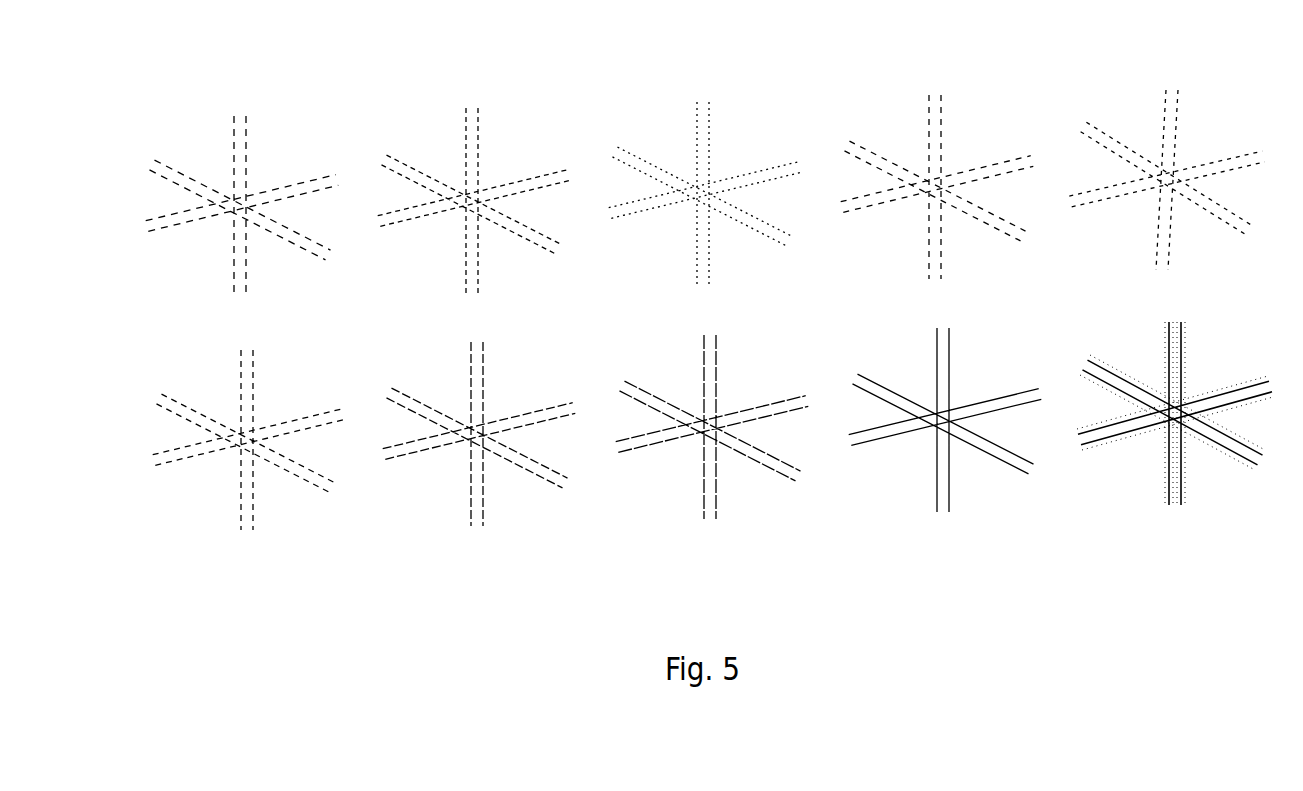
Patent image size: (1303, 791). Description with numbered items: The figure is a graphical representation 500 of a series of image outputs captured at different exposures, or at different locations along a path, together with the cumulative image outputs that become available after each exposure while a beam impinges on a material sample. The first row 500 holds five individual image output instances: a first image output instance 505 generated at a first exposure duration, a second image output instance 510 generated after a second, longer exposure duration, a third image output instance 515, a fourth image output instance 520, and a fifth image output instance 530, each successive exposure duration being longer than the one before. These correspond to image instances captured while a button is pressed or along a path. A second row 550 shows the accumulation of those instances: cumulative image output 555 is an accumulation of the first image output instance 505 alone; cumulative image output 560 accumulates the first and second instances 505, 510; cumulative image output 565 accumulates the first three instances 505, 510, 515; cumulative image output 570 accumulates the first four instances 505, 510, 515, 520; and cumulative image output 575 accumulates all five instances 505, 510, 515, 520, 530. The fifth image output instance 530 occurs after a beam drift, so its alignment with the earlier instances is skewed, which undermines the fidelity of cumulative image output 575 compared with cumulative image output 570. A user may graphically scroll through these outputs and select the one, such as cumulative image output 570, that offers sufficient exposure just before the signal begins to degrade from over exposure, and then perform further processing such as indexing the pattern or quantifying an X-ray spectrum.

The graphical representation 500 is at (652, 170).
The first image output instance 505 is at (242, 175).
The second image output instance 510 is at (474, 173).
The third image output instance 515 is at (705, 166).
The fourth image output instance 520 is at (937, 161).
The fifth image output instance 530 is at (1166, 157).
The second row 550 is at (661, 456).
The cumulative image output 555 is at (249, 470).
The cumulative image output 560 is at (479, 463).
The cumulative image output 565 is at (712, 456).
The cumulative image output 570 is at (945, 449).
The cumulative image output 575 is at (1175, 443).